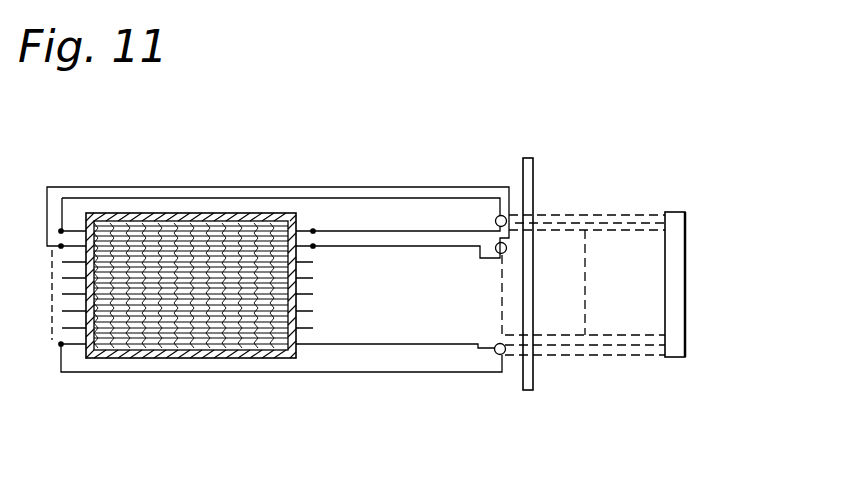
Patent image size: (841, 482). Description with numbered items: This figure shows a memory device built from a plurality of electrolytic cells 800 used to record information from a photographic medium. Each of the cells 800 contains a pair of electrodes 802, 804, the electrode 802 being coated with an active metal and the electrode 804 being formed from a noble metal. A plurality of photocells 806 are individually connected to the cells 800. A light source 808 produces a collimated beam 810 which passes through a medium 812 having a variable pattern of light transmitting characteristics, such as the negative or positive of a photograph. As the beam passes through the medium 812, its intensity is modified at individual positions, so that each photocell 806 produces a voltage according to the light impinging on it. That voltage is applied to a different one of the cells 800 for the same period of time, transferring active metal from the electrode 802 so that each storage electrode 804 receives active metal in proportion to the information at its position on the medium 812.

The electrolytic cells 800 is at (188, 362).
The electrode 802 is at (302, 362).
The electrode 804 is at (77, 346).
The photocells 806 is at (495, 221).
The light source 808 is at (680, 235).
The collimated beam 810 is at (604, 356).
The medium 812 is at (536, 180).